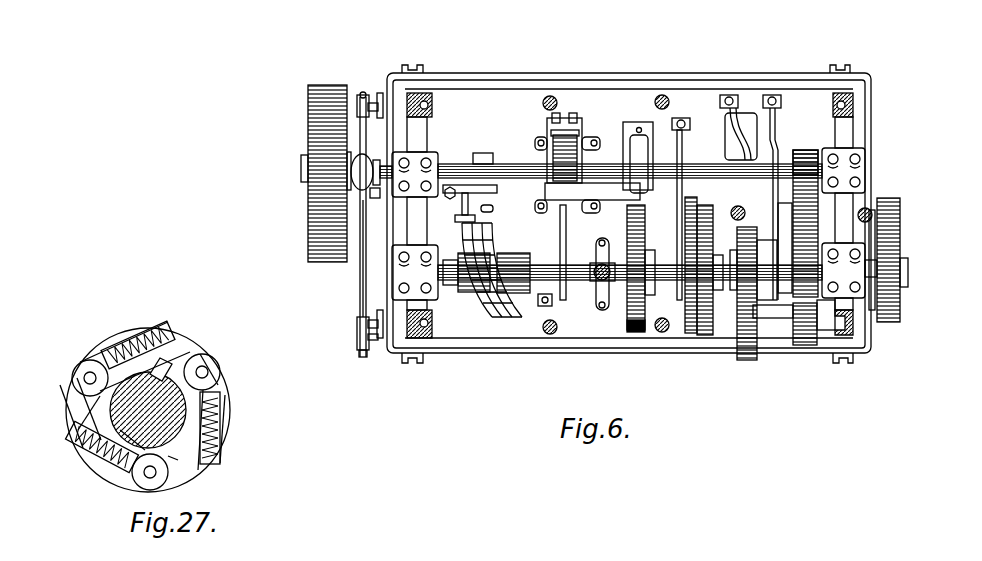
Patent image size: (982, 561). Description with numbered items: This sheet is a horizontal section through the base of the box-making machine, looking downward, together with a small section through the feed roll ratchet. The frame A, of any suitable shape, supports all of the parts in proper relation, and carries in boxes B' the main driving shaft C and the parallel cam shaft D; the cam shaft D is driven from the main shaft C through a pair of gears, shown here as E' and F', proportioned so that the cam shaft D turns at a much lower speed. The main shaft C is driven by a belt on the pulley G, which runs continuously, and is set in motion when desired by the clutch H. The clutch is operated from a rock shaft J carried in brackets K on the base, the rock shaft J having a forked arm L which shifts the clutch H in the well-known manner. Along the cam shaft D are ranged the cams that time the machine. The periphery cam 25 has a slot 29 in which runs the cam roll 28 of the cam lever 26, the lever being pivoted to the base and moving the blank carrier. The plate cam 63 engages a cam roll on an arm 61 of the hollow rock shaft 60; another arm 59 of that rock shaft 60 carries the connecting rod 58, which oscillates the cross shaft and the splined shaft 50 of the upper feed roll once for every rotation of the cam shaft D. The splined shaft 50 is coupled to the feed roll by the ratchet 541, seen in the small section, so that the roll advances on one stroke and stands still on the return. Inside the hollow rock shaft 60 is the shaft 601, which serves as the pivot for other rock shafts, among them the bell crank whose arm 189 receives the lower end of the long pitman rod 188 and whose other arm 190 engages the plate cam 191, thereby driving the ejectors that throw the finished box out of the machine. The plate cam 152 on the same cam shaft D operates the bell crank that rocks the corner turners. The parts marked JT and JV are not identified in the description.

In FIG. 6, the frame A is at (483, 73).
In FIG. 6, the pulley G is at (308, 105).
In FIG. 6, the clutch H is at (350, 172).
In FIG. 6, the brackets K is at (376, 93).
In FIG. 6, the forked arm L is at (377, 196).
In FIG. 6, the rock shaft J is at (360, 303).
In FIG. 6, the boxes B' is at (621, 213).
In FIG. 6, the main driving shaft C is at (463, 170).
In FIG. 6, the cam shaft D is at (577, 280).
In FIG. 6, the cam roll 28 is at (485, 224).
In FIG. 6, the cam lever 26 is at (474, 222).
In FIG. 6, the periphery cam 25 is at (493, 303).
In FIG. 6, the slot 29 is at (513, 318).
In FIG. 6, the solenoid housing JT is at (568, 135).
In FIG. 6, the plunger JV is at (568, 162).
In FIG. 6, the rock shaft 60 is at (605, 192).
In FIG. 6, the arm 59 is at (556, 243).
In FIG. 6, the connecting rod 58 is at (545, 306).
In FIG. 6, the shaft 601 is at (657, 187).
In FIG. 6, the arm 61 is at (623, 213).
In FIG. 6, the plate cam 63 is at (636, 332).
In FIG. 6, the plate cam 152 is at (692, 318).
In FIG. 6, the pitman rod 188 is at (772, 97).
In FIG. 6, the arm 189 is at (773, 128).
In FIG. 6, the bell crank lever arm 190 is at (810, 148).
In FIG. 6, the gear hub E' is at (848, 139).
In FIG. 6, the gear F' is at (819, 264).
In FIG. 6, the plate cam 191 is at (780, 292).
In FIG. 27, the splined shaft 50 is at (150, 408).
In FIG. 27, the ratchet 541 is at (118, 340).